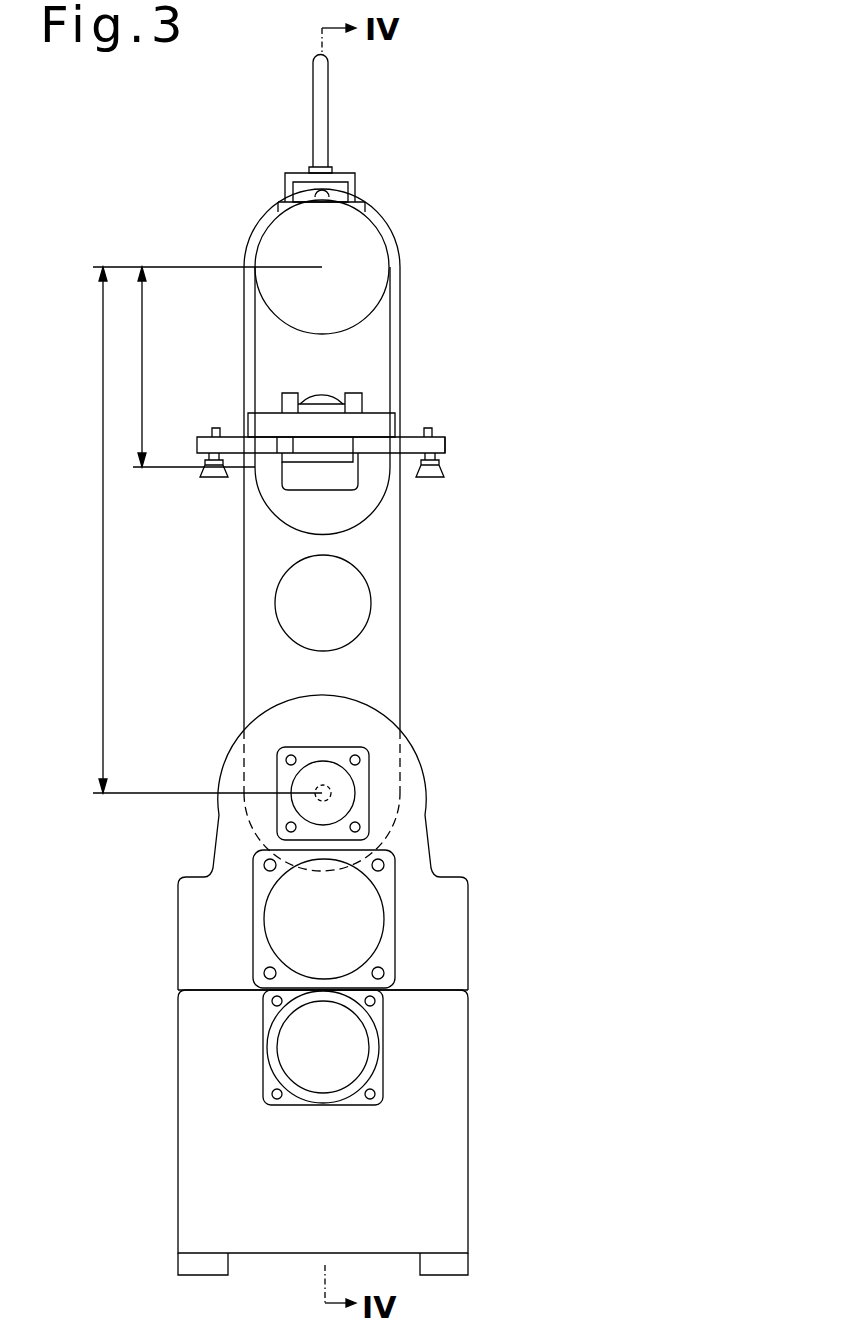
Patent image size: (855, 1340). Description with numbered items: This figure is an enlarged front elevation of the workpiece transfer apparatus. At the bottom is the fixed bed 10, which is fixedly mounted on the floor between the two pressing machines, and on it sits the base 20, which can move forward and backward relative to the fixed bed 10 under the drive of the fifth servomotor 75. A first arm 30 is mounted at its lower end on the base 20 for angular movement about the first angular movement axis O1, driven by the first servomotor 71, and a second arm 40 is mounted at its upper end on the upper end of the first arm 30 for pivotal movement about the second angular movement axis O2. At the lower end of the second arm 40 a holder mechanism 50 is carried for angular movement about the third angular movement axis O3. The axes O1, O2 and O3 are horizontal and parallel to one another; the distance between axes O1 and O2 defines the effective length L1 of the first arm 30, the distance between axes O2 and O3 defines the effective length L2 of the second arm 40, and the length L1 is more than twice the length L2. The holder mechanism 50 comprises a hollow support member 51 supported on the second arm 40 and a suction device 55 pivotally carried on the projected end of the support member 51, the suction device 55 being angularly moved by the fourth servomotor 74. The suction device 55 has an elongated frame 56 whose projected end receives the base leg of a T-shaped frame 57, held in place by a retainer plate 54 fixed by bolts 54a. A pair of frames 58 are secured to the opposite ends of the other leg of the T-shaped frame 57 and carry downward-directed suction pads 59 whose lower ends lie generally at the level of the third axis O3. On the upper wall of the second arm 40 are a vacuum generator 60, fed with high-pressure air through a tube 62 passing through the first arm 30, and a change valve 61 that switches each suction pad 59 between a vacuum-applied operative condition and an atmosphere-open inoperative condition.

The fixed bed 10 is at (470, 1110).
The base 20 is at (450, 943).
The first arm 30 is at (400, 580).
The second arm 40 is at (400, 320).
The holder mechanism 50 is at (447, 429).
The support member 51 is at (328, 445).
The retainer plate 54 is at (327, 400).
The bolts 54a is at (290, 393).
The suction device 55 is at (452, 448).
The frame 56 is at (340, 478).
The T-shaped frame 57 is at (388, 427).
The frames 58 is at (226, 433).
The suction pads 59 is at (205, 477).
The vacuum generator 60 is at (350, 172).
The change valve 61 is at (348, 190).
The tube 62 is at (328, 113).
The first servomotor 71 is at (360, 908).
The fourth servomotor 74 is at (345, 793).
The fifth servomotor 75 is at (350, 1043).
The first angular movement axis O1 is at (330, 786).
The second angular movement axis O2 is at (322, 267).
The third angular movement axis O3 is at (318, 463).
The effective length of the first arm L1 is at (207, 530).
The effective length of the second arm L2 is at (192, 367).